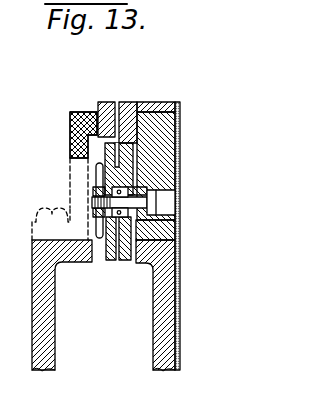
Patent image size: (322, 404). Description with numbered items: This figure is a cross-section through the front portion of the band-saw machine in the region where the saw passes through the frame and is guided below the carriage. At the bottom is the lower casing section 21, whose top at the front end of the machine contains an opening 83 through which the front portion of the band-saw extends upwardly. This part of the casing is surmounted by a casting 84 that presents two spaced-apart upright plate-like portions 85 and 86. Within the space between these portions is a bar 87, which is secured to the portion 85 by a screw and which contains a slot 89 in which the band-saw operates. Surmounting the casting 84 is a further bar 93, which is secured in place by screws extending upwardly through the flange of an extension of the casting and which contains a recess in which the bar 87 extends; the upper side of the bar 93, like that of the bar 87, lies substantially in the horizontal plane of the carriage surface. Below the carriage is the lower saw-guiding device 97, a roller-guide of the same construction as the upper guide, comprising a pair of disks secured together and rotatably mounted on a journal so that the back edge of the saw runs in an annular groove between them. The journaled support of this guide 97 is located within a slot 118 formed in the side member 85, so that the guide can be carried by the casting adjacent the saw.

The lower casing section 21 is at (157, 322).
The opening 83 is at (100, 258).
The casting 84 is at (75, 203).
The upright plate-like portion 85 is at (157, 162).
The upright plate-like portion 86 is at (70, 136).
The bar 87 is at (156, 82).
The slot 89 is at (117, 100).
The bar 93 is at (163, 103).
The saw-guiding device 97 is at (176, 107).
The slot 118 is at (163, 207).